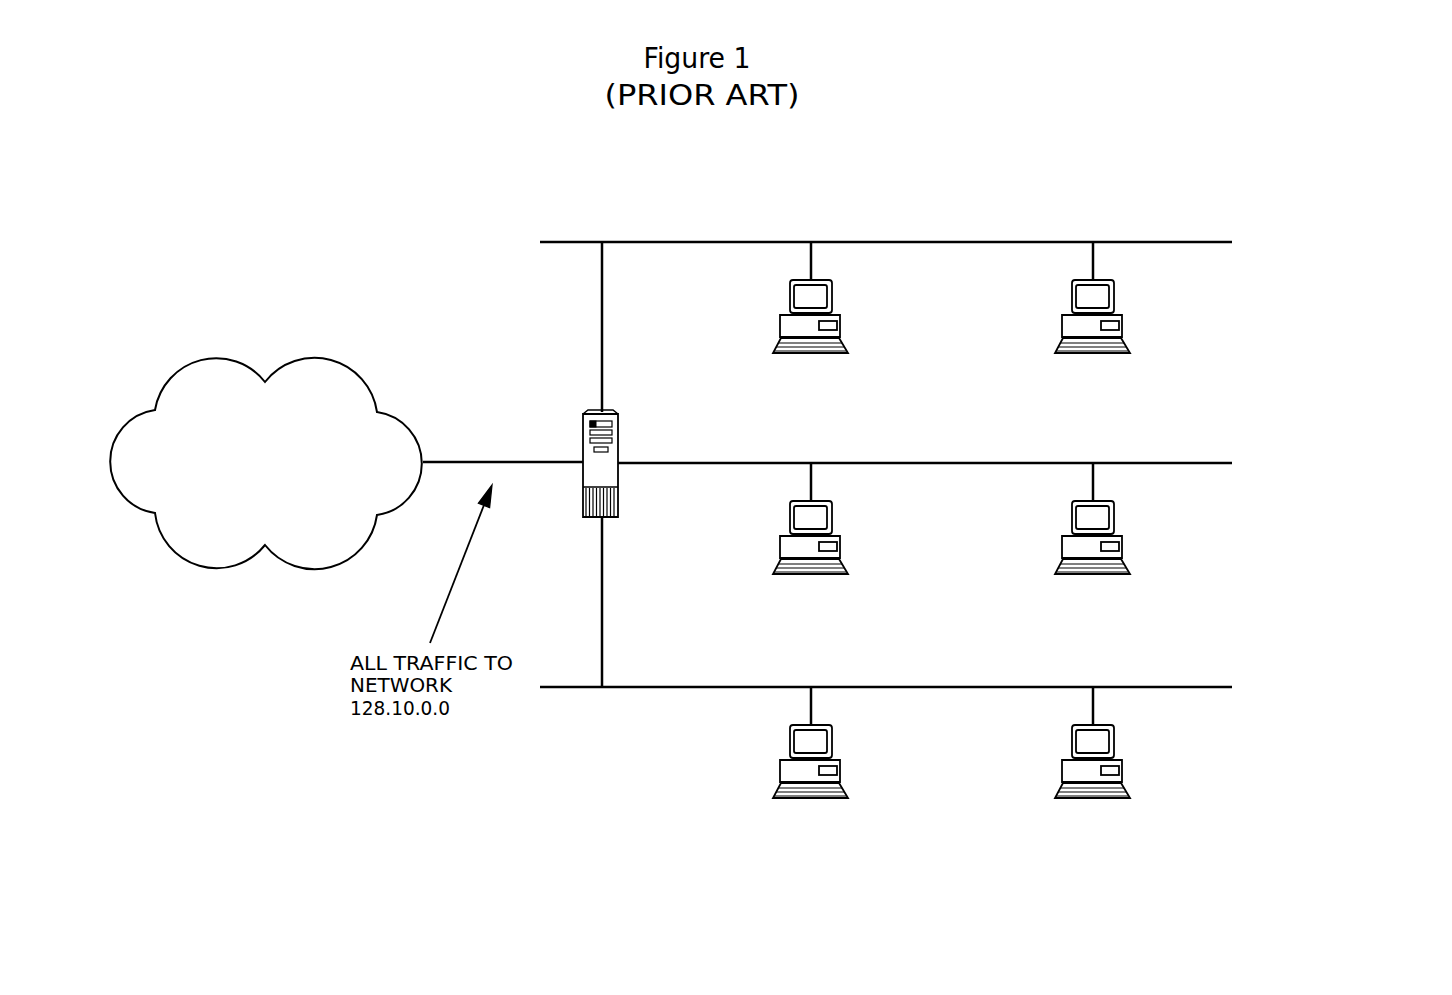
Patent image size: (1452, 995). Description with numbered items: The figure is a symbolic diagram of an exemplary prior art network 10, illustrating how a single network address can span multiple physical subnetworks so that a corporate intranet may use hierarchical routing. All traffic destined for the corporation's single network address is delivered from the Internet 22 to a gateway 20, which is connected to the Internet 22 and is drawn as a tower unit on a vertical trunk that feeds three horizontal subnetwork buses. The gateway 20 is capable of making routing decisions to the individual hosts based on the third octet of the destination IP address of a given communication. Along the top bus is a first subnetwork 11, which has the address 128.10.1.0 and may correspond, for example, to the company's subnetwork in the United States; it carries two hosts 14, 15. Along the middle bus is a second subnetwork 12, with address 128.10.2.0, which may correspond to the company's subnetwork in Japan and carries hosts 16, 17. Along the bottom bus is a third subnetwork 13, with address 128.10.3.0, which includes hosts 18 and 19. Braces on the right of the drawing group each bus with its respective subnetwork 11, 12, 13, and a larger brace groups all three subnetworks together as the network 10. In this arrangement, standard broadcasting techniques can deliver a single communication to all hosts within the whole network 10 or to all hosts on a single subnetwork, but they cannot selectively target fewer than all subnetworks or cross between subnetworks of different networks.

The network 10 is at (1363, 215).
The first subnetwork 11 is at (932, 299).
The second subnetwork 12 is at (971, 520).
The third subnetwork 13 is at (934, 745).
The host 14 is at (859, 315).
The host 15 is at (1141, 315).
The host 16 is at (859, 536).
The host 17 is at (1141, 536).
The host 18 is at (859, 760).
The host 19 is at (1141, 760).
The gateway 20 is at (583, 435).
The Internet 22 is at (338, 370).